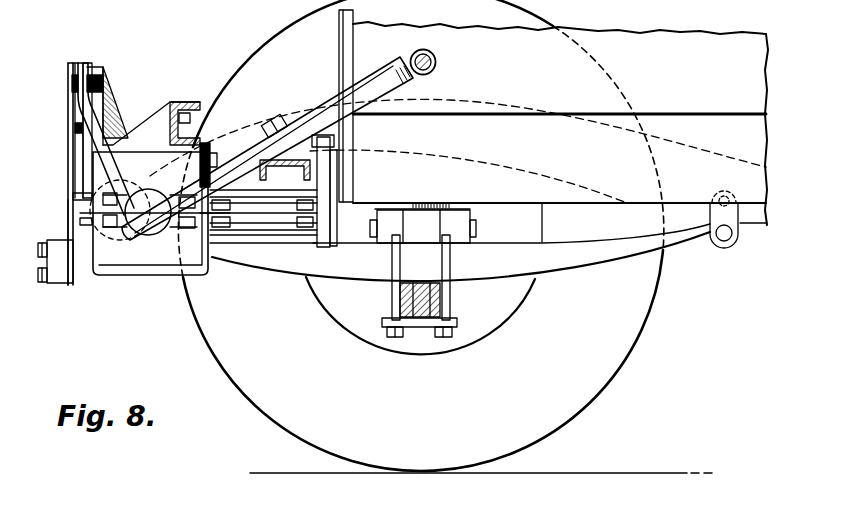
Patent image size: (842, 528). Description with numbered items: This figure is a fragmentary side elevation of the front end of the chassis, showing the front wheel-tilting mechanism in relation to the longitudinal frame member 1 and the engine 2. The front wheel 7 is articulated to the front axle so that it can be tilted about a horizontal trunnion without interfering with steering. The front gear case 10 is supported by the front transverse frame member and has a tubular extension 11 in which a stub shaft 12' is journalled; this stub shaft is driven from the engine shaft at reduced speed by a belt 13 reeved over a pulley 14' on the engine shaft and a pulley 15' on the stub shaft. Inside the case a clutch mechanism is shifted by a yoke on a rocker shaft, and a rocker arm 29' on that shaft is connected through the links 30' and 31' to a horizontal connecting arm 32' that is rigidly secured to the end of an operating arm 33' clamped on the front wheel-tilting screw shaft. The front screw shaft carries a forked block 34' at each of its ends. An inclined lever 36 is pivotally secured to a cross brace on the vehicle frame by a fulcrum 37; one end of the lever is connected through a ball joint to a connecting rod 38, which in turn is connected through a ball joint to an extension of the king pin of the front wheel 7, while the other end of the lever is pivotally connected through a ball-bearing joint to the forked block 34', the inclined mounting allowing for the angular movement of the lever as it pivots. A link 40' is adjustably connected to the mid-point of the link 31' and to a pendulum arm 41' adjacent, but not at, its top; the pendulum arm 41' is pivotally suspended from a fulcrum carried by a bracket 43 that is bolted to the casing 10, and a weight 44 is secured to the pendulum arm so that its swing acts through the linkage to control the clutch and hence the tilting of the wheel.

The longitudinal frame member 1 is at (693, 163).
The engine 2 is at (678, 51).
The front wheel 7 is at (637, 330).
The front gear case 10 is at (152, 115).
The tubular extension 11 is at (260, 235).
The stub shaft 12' is at (335, 192).
The belt 13 is at (325, 177).
The pulley 14' is at (320, 110).
The pulley 15' is at (349, 210).
The rocker arm 29' is at (62, 130).
The link 30' is at (62, 209).
The link 31' is at (53, 174).
The horizontal connecting arm 32' is at (72, 109).
The operating arm 33' is at (111, 139).
The forked block 34' is at (155, 228).
The inclined lever 36 is at (243, 157).
The fulcrum 37 is at (277, 118).
The connecting rod 38 is at (436, 62).
The link 40' is at (56, 118).
The pendulum arm 41' is at (50, 242).
The bracket 43 is at (107, 67).
The weight 44 is at (62, 277).